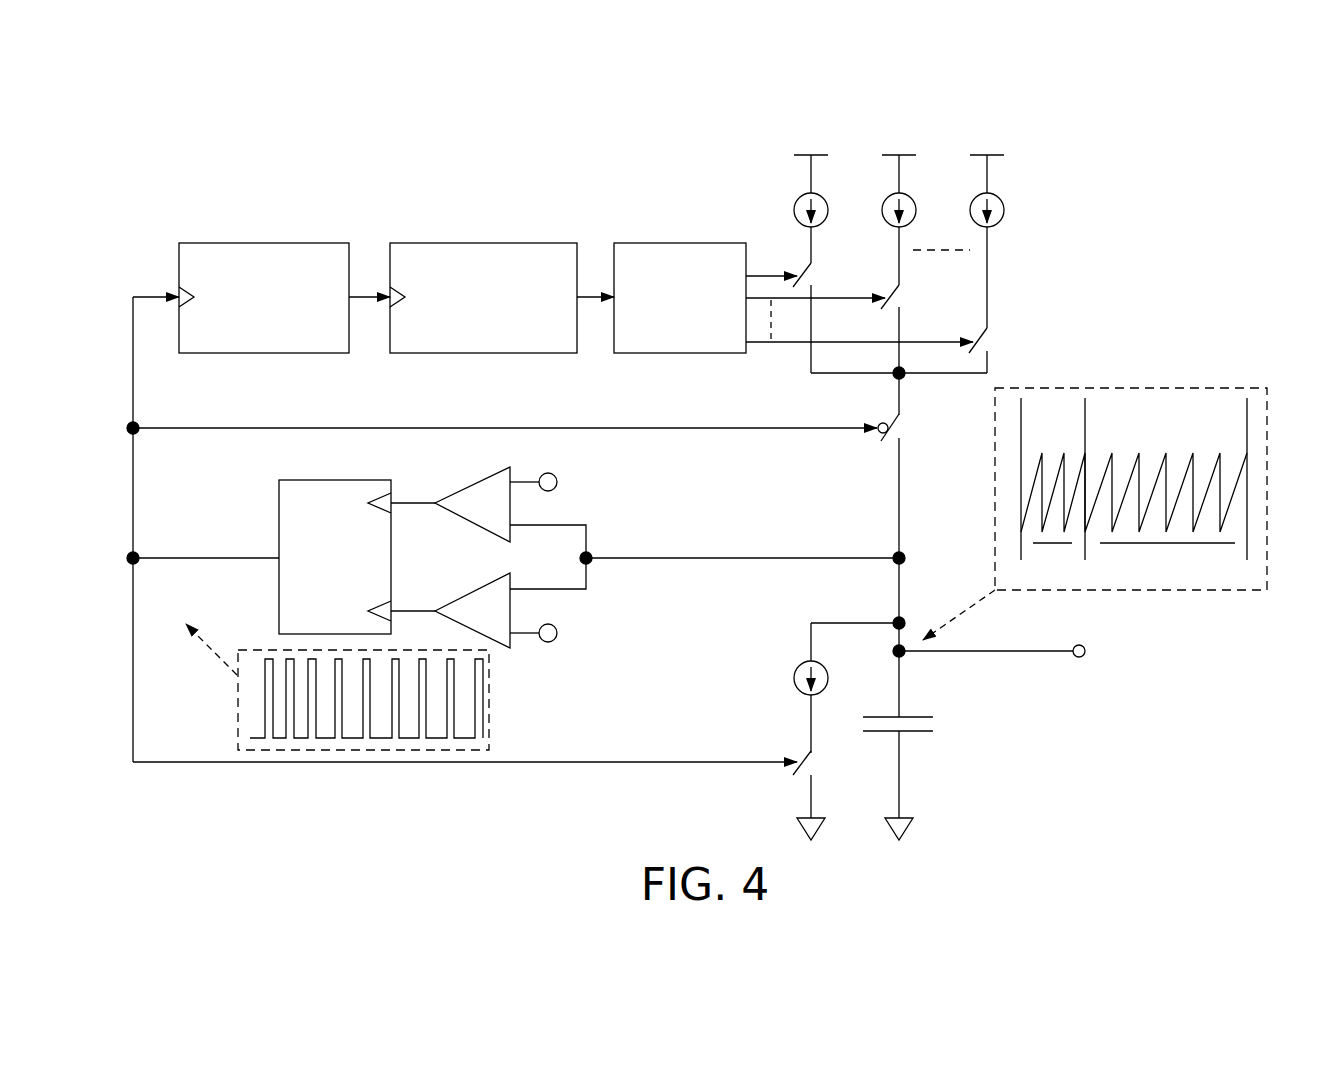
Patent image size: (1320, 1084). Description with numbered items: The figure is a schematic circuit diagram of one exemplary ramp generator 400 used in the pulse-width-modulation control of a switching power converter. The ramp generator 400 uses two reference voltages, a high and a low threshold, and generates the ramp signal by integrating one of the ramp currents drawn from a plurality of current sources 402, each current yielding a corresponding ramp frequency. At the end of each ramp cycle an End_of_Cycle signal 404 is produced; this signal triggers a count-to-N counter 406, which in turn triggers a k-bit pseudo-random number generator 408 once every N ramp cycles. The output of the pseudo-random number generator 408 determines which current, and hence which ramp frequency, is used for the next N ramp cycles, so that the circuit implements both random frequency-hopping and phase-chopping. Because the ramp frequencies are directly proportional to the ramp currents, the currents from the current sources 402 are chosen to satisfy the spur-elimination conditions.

The ramp generator 400 is at (1090, 174).
The plurality of current sources 402 is at (742, 173).
The End_of_Cycle signal 404 is at (487, 411).
The count-to-N counter 406 is at (240, 243).
The k-bit pseudo-random number generator 408 is at (525, 243).